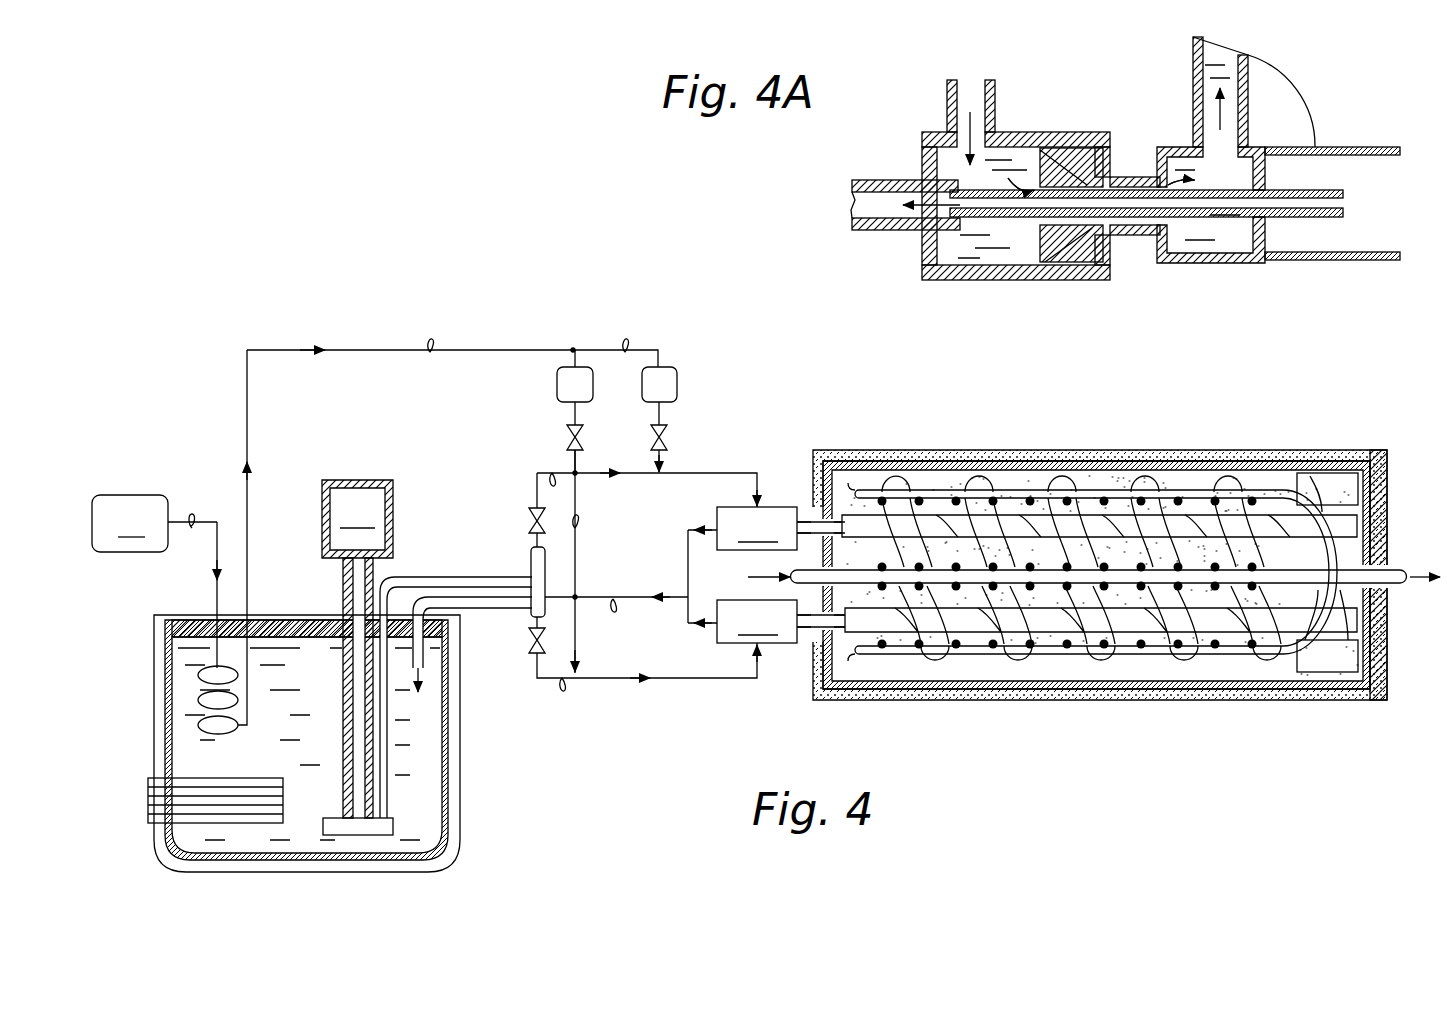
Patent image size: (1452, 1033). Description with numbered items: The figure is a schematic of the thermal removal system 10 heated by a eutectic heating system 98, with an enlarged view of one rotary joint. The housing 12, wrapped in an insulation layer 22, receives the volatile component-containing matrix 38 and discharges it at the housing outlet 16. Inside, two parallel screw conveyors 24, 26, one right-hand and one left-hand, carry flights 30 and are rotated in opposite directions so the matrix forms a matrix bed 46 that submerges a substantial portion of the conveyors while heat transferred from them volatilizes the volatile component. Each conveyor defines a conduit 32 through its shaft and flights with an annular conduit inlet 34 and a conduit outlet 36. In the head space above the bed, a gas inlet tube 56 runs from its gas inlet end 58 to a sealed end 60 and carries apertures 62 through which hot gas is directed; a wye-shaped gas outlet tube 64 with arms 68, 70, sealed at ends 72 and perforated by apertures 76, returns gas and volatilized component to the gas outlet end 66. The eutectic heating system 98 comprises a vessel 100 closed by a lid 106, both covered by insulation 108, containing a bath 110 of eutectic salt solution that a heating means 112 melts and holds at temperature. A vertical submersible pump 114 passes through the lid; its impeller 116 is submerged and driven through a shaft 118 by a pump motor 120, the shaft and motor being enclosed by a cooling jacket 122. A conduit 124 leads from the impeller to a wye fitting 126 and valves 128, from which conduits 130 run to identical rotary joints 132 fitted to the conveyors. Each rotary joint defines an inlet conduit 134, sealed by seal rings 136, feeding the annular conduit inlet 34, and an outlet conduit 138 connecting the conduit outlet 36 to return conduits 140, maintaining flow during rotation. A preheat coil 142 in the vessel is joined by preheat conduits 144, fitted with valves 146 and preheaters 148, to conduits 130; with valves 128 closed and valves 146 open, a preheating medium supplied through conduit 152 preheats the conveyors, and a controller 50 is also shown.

In FIG. 4, the thermal removal system 10 is at (345, 312).
In FIG. 4, the housing 12 is at (1094, 585).
In FIG. 4, the housing outlet 16 is at (1335, 470).
In FIG. 4, the insulation layer 22 is at (895, 452).
In FIG. 4A, the screw conveyor 24 is at (1173, 146).
In FIG. 4, the screw conveyor 24 is at (1062, 642).
In FIG. 4A, the screw conveyor 26 is at (1278, 205).
In FIG. 4, the screw conveyor 26 is at (1092, 500).
In FIG. 4, the flights 30 is at (1277, 642).
In FIG. 4A, the conduit 32 is at (1232, 178).
In FIG. 4A, the annular conduit inlet 34 is at (1112, 192).
In FIG. 4A, the conduit outlet 36 is at (1128, 205).
In FIG. 4, the volatile component-containing matrix 38 is at (1150, 674).
In FIG. 4, the matrix bed 46 is at (1237, 684).
In FIG. 4, the controller 50 is at (154, 523).
In FIG. 4, the gas inlet tube 56 is at (1243, 553).
In FIG. 4, the gas inlet end 58 is at (830, 648).
In FIG. 4, the sealed end 60 is at (1318, 647).
In FIG. 4, the apertures 62 is at (1010, 597).
In FIG. 4, the gas outlet tube 64 is at (1040, 488).
In FIG. 4, the gas outlet end 66 is at (1392, 586).
In FIG. 4, the arm 68 is at (975, 656).
In FIG. 4, the arm 70 is at (1162, 470).
In FIG. 4, the sealed ends 72 is at (855, 488).
In FIG. 4, the apertures 76 is at (890, 652).
In FIG. 4, the eutectic heating system 98 is at (300, 611).
In FIG. 4, the vessel 100 is at (448, 763).
In FIG. 4, the lid 106 is at (272, 620).
In FIG. 4, the insulation 108 is at (450, 680).
In FIG. 4, the bath 110 is at (422, 787).
In FIG. 4, the heating means 112 is at (150, 797).
In FIG. 4, the vertical submersible pump 114 is at (337, 497).
In FIG. 4, the impeller 116 is at (338, 826).
In FIG. 4, the shaft 118 is at (345, 586).
In FIG. 4, the pump motor 120 is at (361, 515).
In FIG. 4, the jacket 122 is at (343, 745).
In FIG. 4, the conduit 124 is at (388, 712).
In FIG. 4, the wye fitting 126 is at (531, 562).
In FIG. 4, the valves 128 is at (530, 516).
In FIG. 4A, the conduits 130 is at (947, 105).
In FIG. 4, the conduits 130 is at (552, 480).
In FIG. 4A, the rotary joints 132 is at (1033, 130).
In FIG. 4, the rotary joints 132 is at (781, 575).
In FIG. 4A, the inlet conduit 134 is at (945, 165).
In FIG. 4A, the seal rings 136 is at (1075, 147).
In FIG. 4A, the outlet conduit 138 is at (919, 228).
In FIG. 4A, the conduits 140 is at (856, 180).
In FIG. 4, the conduits 140 is at (613, 594).
In FIG. 4, the preheat coil 142 is at (196, 703).
In FIG. 4, the preheat conduits 144 is at (430, 352).
In FIG. 4, the valves 146 is at (584, 441).
In FIG. 4, the preheaters 148 is at (557, 380).
In FIG. 4, the conduit 152 is at (194, 514).